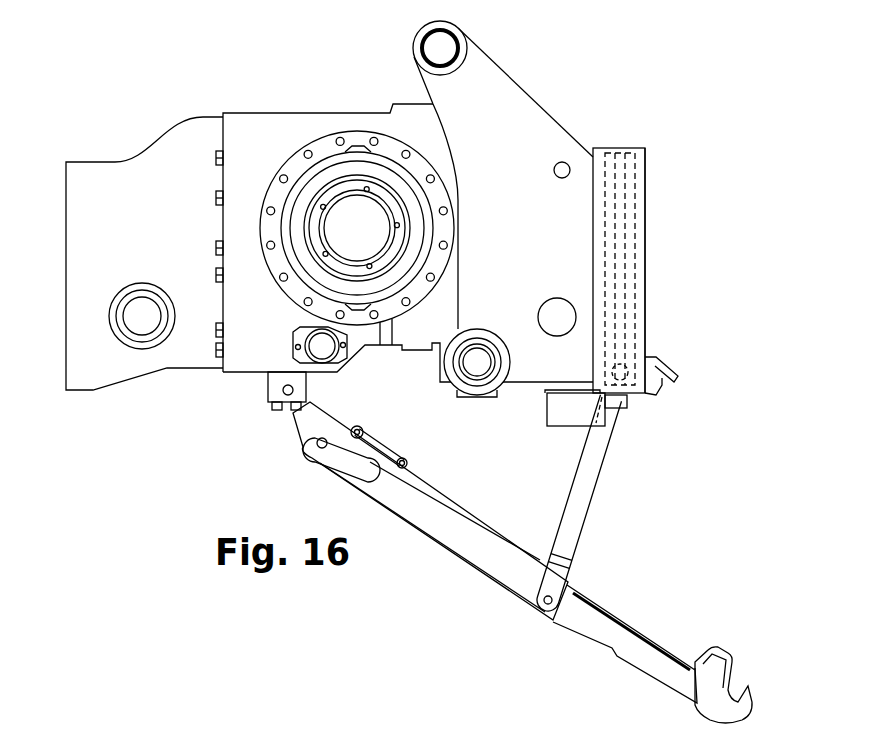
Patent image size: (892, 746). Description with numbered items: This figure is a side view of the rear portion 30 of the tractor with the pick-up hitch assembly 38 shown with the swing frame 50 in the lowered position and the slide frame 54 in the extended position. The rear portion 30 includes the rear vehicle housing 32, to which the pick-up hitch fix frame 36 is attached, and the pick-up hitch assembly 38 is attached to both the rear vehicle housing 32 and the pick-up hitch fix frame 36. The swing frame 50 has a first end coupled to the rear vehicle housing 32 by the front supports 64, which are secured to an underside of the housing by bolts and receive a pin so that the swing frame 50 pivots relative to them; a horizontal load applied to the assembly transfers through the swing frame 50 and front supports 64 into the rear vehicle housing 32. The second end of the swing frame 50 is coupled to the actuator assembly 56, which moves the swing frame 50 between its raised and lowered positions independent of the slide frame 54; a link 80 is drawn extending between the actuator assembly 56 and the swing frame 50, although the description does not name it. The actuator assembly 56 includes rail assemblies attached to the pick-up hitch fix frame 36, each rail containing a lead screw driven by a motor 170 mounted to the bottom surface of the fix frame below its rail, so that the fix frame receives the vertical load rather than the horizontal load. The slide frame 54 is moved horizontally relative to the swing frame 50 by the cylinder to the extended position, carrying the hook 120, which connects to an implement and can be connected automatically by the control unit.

The rear portion 30 is at (606, 80).
The rear vehicle housing 32 is at (262, 107).
The pick-up hitch fix frame 36 is at (660, 380).
The pick-up hitch assembly 38 is at (725, 200).
The swing frame 50 is at (405, 522).
The slide frame 54 is at (605, 618).
The actuator assembly 56 is at (647, 275).
The front supports 64 is at (265, 394).
The link 80 is at (577, 493).
The hook 120 is at (742, 702).
The motor 170 is at (570, 410).